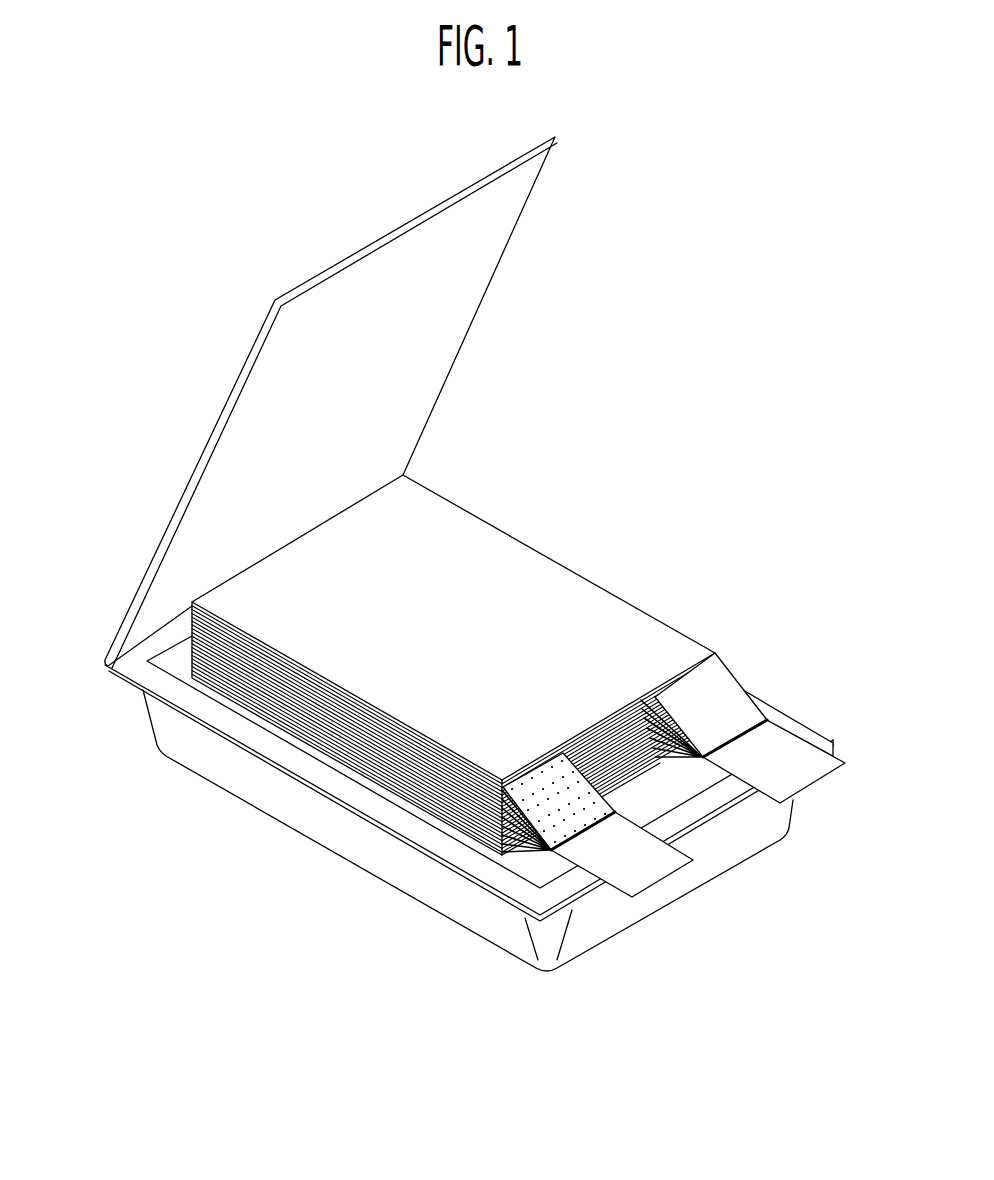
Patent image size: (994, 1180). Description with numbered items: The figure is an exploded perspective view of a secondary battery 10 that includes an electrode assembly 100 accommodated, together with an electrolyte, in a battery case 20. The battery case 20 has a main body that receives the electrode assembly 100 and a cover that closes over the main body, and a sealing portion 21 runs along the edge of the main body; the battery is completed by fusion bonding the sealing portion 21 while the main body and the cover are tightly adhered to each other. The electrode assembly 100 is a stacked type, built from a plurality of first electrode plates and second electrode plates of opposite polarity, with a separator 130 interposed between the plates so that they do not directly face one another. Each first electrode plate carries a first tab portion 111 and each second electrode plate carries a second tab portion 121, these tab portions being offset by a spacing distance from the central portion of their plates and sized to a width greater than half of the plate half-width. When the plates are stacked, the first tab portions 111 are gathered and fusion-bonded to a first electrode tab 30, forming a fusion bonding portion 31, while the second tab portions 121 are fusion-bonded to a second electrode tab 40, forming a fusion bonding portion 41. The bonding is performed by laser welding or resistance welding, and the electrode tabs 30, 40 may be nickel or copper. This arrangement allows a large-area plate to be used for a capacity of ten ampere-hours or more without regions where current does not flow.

The secondary battery 10 is at (275, 231).
The battery case 20 is at (147, 733).
The sealing portion 21 is at (147, 673).
The electrode assembly 100 is at (453, 616).
The separator 130 is at (580, 604).
The first tab portion 111 is at (712, 682).
The second tab portion 121 is at (543, 820).
The first electrode tab 30 is at (798, 780).
The fusion bonding portion 31 is at (743, 730).
The second electrode tab 40 is at (640, 873).
The fusion bonding portion 41 is at (573, 837).